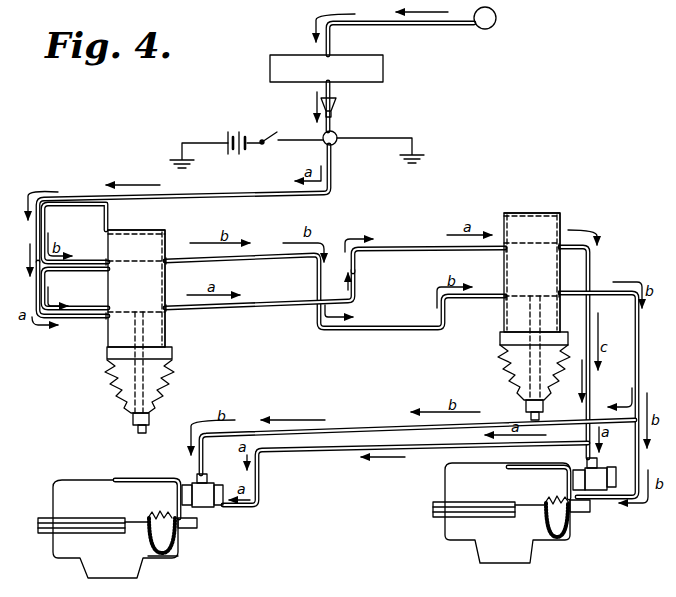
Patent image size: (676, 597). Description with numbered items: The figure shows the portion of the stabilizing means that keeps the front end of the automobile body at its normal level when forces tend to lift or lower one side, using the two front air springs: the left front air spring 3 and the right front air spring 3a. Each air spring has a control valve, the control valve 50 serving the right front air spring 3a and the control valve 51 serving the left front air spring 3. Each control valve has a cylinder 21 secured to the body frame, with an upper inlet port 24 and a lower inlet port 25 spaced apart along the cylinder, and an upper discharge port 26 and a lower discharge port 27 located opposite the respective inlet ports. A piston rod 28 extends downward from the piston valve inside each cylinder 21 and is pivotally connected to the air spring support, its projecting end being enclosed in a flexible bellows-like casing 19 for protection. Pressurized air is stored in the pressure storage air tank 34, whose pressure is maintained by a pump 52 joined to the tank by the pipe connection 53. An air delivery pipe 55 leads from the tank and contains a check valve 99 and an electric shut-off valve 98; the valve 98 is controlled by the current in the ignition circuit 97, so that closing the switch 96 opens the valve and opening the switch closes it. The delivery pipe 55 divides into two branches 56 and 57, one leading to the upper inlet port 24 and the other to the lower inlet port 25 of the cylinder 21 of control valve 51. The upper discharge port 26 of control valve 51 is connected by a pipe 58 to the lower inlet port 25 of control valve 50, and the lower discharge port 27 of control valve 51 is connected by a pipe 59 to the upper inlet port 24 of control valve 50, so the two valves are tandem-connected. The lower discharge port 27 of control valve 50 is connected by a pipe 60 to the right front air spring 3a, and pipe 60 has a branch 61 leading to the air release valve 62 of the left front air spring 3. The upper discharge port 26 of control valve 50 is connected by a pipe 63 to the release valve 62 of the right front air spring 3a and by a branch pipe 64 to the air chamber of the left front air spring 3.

The left front air spring 3 is at (80, 492).
The right front air spring 3a is at (450, 484).
The flexible bellows-like casing 19 is at (165, 385).
The cylinder 21 is at (140, 229).
The upper inlet port 24 is at (108, 262).
The lower inlet port 25 is at (107, 318).
The upper discharge port 26 is at (168, 262).
The lower discharge port 27 is at (168, 311).
The piston rod 28 is at (165, 373).
The pressure storage air tank 34 is at (380, 68).
The control valve 50 is at (558, 213).
The control valve 51 is at (165, 229).
The pump 52 is at (493, 24).
The pipe connection 53 is at (420, 27).
The air delivery pipe 55 is at (335, 162).
The branch 56 is at (74, 266).
The branch 57 is at (70, 319).
The pipe 58 is at (267, 258).
The pipe 59 is at (415, 250).
The pipe 60 is at (640, 348).
The branch 61 is at (375, 428).
The air release valve 62 is at (212, 484).
The pipe 63 is at (592, 312).
The branch pipe 64 is at (320, 455).
The switch 96 is at (267, 136).
The ignition circuit 97 is at (300, 140).
The electric shut-off valve 98 is at (337, 133).
The check valve 99 is at (335, 107).